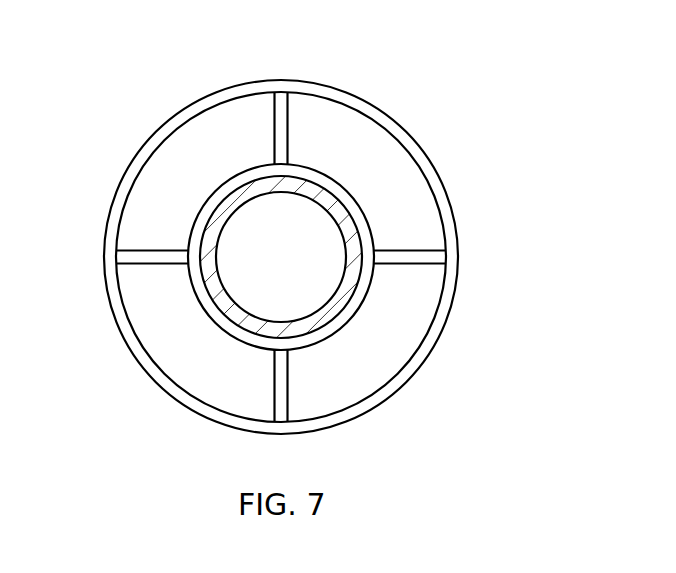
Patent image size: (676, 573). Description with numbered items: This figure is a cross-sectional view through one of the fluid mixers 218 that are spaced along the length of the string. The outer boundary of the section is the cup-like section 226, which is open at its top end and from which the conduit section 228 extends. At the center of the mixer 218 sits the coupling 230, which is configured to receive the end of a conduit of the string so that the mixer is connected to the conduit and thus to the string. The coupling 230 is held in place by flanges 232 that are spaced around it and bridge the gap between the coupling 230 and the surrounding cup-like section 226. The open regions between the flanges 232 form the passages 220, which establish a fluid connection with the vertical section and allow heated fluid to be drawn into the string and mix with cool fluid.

The fluid mixer 218 is at (430, 125).
The passages 220 is at (189, 138).
The cup-like section 226 is at (435, 347).
The conduit section 228 is at (353, 240).
The coupling 230 is at (220, 330).
The flanges 232 is at (281, 122).